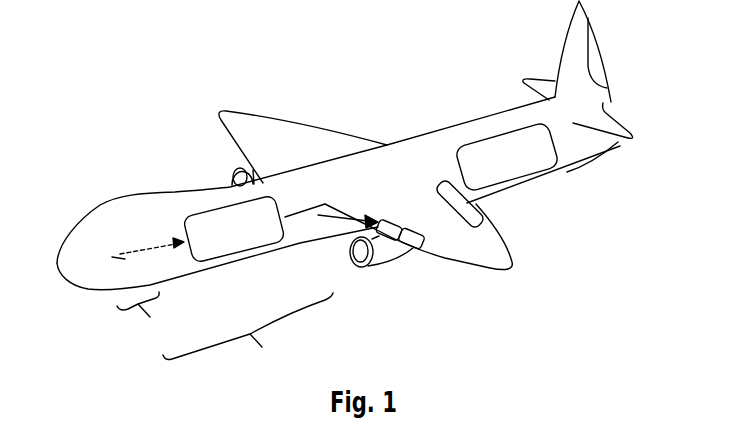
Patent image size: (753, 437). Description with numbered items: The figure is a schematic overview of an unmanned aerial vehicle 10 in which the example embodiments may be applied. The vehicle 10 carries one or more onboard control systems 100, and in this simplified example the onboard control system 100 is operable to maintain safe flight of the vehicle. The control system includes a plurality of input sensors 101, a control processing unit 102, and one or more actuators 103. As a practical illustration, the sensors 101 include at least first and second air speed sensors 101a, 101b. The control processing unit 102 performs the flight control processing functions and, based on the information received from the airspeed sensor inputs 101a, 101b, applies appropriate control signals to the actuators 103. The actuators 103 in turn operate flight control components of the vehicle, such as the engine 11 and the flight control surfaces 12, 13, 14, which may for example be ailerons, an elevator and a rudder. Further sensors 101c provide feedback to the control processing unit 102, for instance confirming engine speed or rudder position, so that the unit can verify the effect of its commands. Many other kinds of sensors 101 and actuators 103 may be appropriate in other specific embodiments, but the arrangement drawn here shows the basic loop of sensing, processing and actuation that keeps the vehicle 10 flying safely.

The vehicle 10 is at (604, 291).
The engine 11 is at (389, 262).
The flight control surface 12 is at (487, 217).
The flight control surface 13 is at (618, 118).
The flight control surface 14 is at (597, 62).
The onboard control system 100 is at (248, 328).
The input sensors 101 is at (149, 313).
The first air speed sensor 101a is at (111, 251).
The second air speed sensor 101b is at (122, 258).
The further sensors 101c is at (418, 245).
The control processing unit 102 is at (248, 250).
The actuators 103 is at (389, 222).